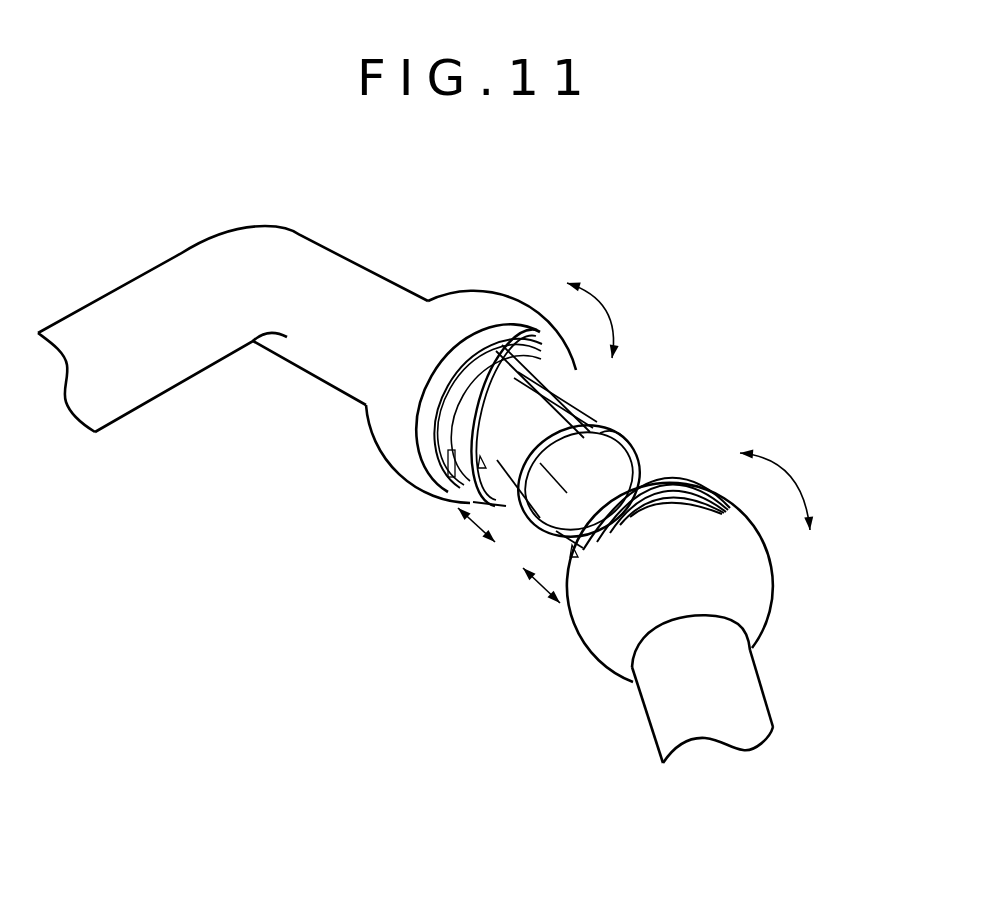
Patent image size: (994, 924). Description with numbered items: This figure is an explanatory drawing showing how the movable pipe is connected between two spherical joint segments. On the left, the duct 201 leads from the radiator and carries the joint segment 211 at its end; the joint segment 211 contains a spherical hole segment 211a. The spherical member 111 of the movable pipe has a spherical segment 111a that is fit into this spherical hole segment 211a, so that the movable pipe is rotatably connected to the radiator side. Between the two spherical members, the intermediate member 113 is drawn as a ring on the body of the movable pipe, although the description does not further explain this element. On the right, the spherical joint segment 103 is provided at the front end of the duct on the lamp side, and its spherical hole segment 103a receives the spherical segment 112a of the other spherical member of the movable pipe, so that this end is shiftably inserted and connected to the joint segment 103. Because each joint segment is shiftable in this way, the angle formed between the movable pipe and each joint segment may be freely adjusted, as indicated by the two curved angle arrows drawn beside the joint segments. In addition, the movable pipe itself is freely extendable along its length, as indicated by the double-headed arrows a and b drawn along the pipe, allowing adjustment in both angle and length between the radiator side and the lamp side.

The duct 201 is at (293, 370).
The joint segment 211 is at (480, 288).
The spherical hole segment 211a is at (517, 330).
The spherical member 111 is at (582, 382).
The spherical segment 111a is at (447, 475).
The intermediate ring member 113 is at (628, 440).
The spherical segment 112a is at (685, 477).
The spherical joint segment 103 is at (750, 607).
The spherical hole segment 103a is at (747, 517).
The arrow a is at (477, 530).
The arrow b is at (545, 590).